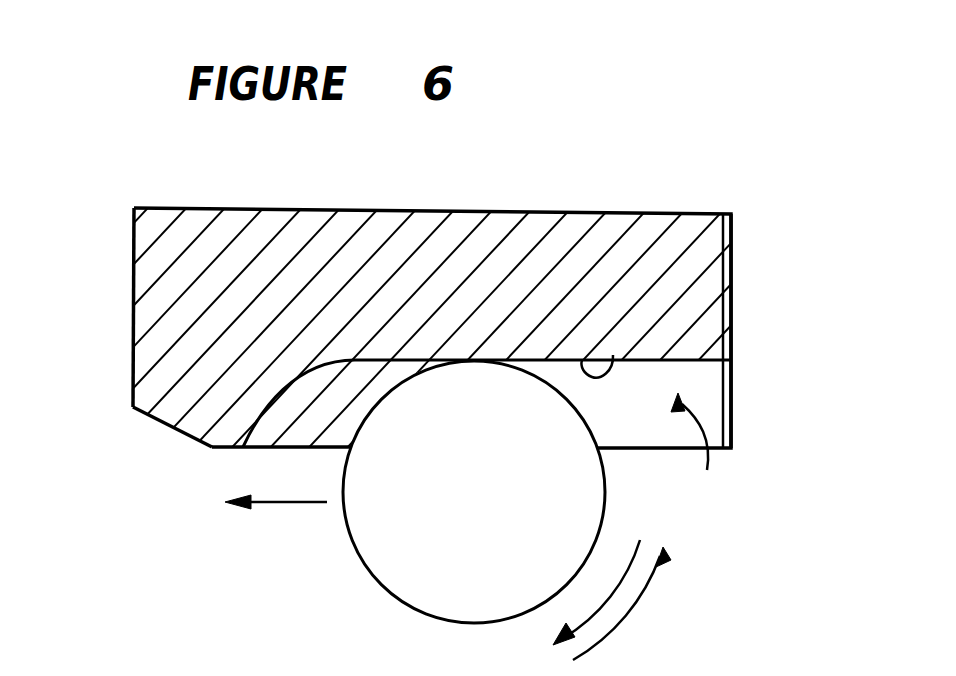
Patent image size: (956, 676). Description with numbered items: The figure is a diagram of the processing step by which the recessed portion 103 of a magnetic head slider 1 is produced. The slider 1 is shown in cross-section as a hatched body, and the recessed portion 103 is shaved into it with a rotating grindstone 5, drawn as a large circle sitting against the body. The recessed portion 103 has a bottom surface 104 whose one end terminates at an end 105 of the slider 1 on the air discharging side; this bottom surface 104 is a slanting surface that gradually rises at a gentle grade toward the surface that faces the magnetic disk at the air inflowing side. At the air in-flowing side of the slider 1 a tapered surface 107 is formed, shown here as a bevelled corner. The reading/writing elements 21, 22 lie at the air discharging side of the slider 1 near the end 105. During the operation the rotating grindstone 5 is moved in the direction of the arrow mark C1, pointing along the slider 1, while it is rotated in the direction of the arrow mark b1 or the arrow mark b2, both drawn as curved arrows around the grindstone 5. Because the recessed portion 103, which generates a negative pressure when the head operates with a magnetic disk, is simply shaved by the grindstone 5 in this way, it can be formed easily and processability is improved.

The slider 1 is at (505, 243).
The rotating grindstone 5 is at (567, 492).
The reading/writing element 21 is at (541, 403).
The reading/writing element 22 is at (731, 398).
The recessed portion 103 is at (703, 454).
The bottom surface 104 is at (613, 355).
The end 105 is at (731, 298).
The tapered surface 107 is at (155, 422).
The arrow mark C1 is at (282, 502).
The arrow mark b1 is at (618, 592).
The arrow mark b2 is at (625, 615).